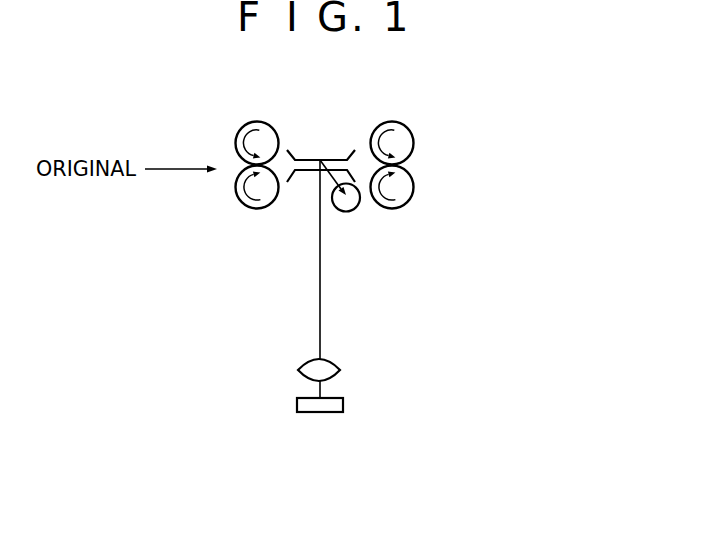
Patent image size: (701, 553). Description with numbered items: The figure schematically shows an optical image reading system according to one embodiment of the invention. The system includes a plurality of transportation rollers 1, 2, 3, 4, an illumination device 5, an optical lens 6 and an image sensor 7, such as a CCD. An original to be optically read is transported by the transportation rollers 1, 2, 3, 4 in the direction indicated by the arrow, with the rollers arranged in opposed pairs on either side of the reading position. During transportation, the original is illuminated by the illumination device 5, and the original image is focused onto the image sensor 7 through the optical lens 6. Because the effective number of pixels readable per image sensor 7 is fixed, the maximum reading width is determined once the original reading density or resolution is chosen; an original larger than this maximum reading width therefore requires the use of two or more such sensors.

The transportation roller 1 is at (245, 123).
The transportation roller 2 is at (253, 210).
The transportation roller 3 is at (413, 134).
The transportation roller 4 is at (413, 187).
The illumination device 5 is at (352, 211).
The optical lens 6 is at (301, 364).
The image sensor 7 is at (343, 402).